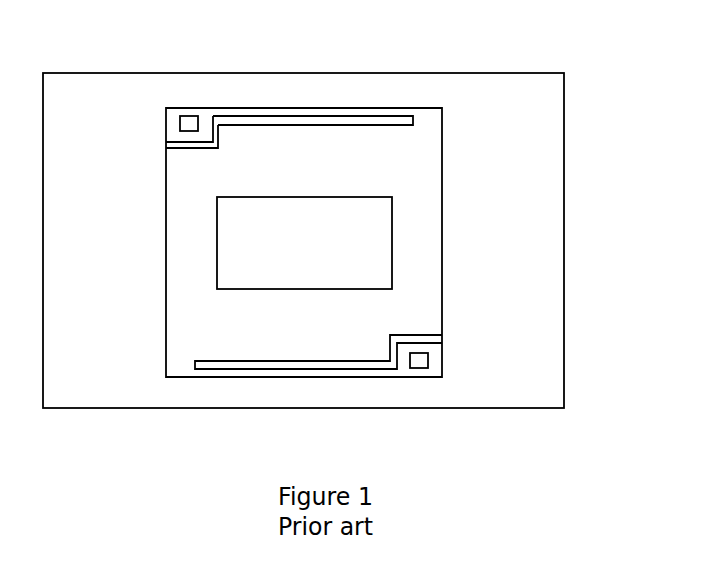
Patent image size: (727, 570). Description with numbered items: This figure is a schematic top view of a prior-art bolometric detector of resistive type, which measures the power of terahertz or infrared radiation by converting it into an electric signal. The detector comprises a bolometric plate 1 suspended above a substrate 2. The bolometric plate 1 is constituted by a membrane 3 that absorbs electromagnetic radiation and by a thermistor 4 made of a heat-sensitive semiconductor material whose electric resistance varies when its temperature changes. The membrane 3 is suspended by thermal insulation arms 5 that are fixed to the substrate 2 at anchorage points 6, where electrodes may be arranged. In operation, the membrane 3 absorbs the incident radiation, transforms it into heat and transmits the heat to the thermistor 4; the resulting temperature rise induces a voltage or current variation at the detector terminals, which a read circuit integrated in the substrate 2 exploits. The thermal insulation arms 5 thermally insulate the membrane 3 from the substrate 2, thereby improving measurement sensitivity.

The bolometric plate 1 is at (336, 208).
The substrate 2 is at (522, 380).
The membrane 3 is at (420, 208).
The thermistor 4 is at (361, 271).
The thermal insulation arms 5 is at (293, 110).
The anchorage points 6 is at (191, 124).